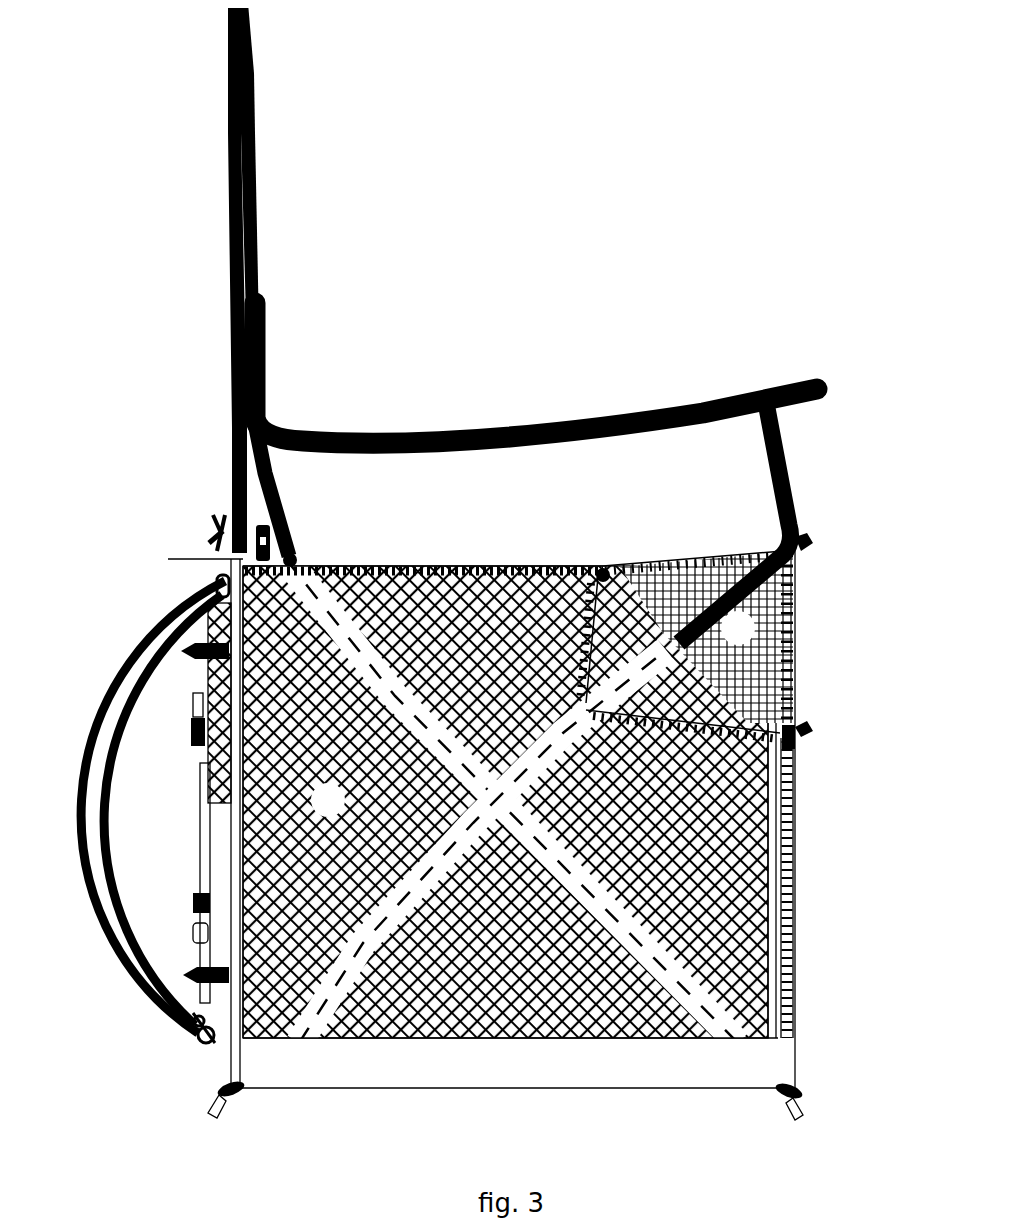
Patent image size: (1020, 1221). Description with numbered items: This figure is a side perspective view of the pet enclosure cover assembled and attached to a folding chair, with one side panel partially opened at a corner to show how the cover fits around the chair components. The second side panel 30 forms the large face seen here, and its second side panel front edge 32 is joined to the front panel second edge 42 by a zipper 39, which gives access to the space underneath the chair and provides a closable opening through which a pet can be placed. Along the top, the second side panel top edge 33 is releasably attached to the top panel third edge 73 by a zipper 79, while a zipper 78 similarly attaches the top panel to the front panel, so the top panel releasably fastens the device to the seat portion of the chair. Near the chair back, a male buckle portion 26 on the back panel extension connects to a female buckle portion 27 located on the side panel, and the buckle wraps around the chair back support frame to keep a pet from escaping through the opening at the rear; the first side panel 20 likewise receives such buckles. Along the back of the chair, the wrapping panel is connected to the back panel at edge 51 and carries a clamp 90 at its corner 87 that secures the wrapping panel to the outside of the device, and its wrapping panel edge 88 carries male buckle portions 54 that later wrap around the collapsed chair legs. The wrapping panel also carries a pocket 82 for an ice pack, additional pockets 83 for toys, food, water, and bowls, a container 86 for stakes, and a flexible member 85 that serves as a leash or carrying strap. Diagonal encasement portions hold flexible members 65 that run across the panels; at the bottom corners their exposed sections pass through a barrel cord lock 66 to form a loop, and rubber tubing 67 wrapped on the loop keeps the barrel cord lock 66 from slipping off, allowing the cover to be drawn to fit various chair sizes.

The first side panel 20 is at (706, 637).
The male buckle portion 26 is at (250, 524).
The female buckle portion 27 is at (212, 532).
The second side panel 30 is at (510, 800).
The second side panel front edge 32 is at (587, 707).
The second side panel top edge 33 is at (548, 592).
The zipper 39 is at (804, 725).
The front panel second edge 42 is at (792, 605).
The edge 51 is at (232, 996).
The male buckle portion 54 is at (178, 645).
The flexible member 65 is at (705, 1008).
The barrel cord lock 66 is at (800, 1085).
The rubber tubing 67 is at (805, 1110).
The top panel third edge 73 is at (685, 555).
The zipper 78 is at (808, 540).
The zipper 79 is at (595, 567).
The pocket 82 is at (190, 706).
The additional pockets 83 is at (210, 866).
The flexible member 85 is at (125, 737).
The container 86 is at (200, 821).
The corner 87 is at (191, 557).
The wrapping panel edge 88 is at (188, 1020).
The clamp 90 is at (226, 518).